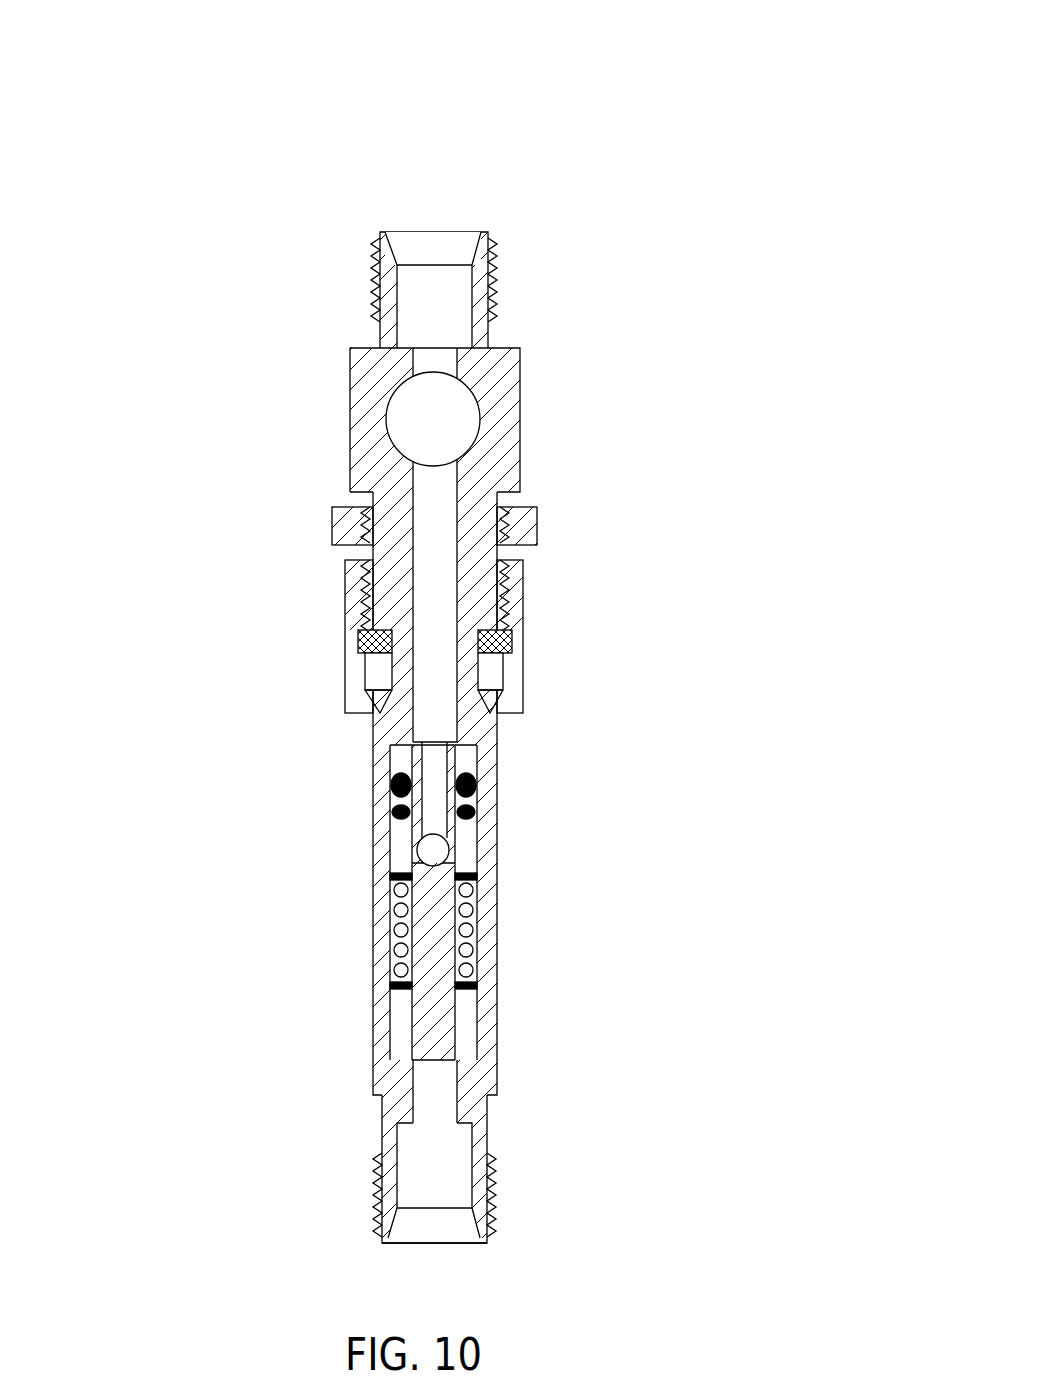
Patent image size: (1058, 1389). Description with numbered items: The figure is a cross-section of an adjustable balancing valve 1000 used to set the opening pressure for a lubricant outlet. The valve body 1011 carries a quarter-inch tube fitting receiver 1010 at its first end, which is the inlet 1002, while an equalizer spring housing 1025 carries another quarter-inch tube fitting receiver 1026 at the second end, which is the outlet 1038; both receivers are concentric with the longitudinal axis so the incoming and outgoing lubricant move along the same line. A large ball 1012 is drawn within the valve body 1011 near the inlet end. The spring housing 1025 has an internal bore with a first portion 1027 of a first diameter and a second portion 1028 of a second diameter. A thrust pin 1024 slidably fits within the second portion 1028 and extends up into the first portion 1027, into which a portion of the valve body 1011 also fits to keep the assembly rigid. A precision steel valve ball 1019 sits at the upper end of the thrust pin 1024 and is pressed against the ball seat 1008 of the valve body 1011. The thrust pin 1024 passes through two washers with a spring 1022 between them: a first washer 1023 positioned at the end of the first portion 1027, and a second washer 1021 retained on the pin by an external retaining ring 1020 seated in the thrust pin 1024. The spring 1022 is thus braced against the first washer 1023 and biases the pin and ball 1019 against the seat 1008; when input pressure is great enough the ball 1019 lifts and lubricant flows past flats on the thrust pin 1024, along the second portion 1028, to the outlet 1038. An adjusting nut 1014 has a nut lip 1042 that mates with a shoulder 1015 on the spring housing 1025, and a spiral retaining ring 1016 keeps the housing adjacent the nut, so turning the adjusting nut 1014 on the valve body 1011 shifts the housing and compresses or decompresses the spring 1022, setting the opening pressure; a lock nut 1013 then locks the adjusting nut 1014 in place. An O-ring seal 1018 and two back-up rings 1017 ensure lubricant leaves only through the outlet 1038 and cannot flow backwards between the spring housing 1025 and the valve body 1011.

The balancing valve 1000 is at (582, 78).
The inlet 1002 is at (427, 232).
The tube fitting receiver 1010 is at (437, 248).
The valve body 1011 is at (497, 383).
The ball 1012 is at (445, 432).
The lock nut 1013 is at (345, 523).
The adjusting nut 1014 is at (525, 615).
The shoulder 1015 is at (492, 718).
The spiral retaining ring 1016 is at (372, 713).
The nut lip 1042 is at (378, 703).
The back-up rings 1017 is at (393, 777).
The O-ring seal 1018 is at (468, 780).
The ball seat 1008 is at (447, 838).
The precision steel valve ball 1019 is at (478, 850).
The external retaining ring 1020 is at (402, 870).
The second washer 1021 is at (480, 869).
The spring 1022 is at (397, 930).
The first portion 1027 is at (475, 935).
The first washer 1023 is at (462, 992).
The thrust pin 1024 is at (440, 1037).
The second portion 1028 is at (448, 1085).
The equalizer spring housing 1025 is at (470, 1098).
The tube fitting receiver 1026 is at (443, 1193).
The outlet 1038 is at (445, 1237).